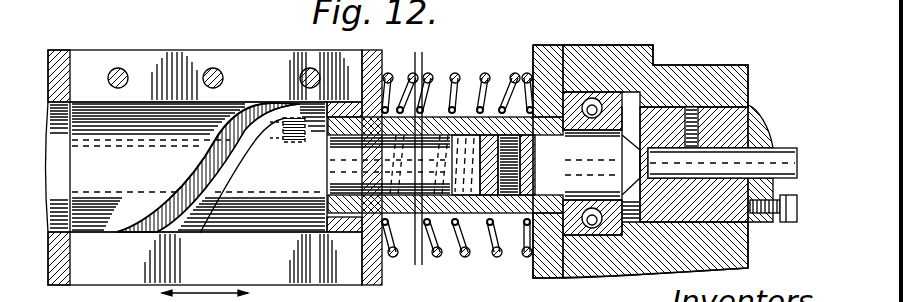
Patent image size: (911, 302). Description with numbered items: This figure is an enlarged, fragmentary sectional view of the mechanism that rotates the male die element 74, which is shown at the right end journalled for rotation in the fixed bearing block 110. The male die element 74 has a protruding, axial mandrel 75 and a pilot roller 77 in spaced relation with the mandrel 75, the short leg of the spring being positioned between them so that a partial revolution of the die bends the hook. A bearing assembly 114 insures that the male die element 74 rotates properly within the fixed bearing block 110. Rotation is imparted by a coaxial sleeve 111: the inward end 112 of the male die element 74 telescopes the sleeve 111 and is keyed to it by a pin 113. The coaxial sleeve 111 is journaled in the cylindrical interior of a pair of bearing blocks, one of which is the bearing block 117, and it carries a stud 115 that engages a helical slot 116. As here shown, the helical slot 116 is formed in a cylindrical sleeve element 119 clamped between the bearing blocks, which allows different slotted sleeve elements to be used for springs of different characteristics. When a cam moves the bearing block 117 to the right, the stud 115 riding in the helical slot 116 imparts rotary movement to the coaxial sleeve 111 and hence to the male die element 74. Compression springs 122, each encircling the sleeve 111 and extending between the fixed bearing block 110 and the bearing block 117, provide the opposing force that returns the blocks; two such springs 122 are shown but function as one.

The male die element 74 is at (757, 118).
The mandrel 75 is at (781, 148).
The pilot roller 77 is at (785, 222).
The fixed bearing block 110 is at (610, 48).
The coaxial sleeve 111 is at (452, 214).
The inward end 112 is at (512, 214).
The pin 113 is at (533, 147).
The bearing assembly 114 is at (605, 236).
The stud 115 is at (278, 124).
The helical slot 116 is at (205, 180).
The bearing block 117 is at (196, 50).
The cylindrical sleeve element 119 is at (112, 232).
The compression spring 122 is at (457, 78).